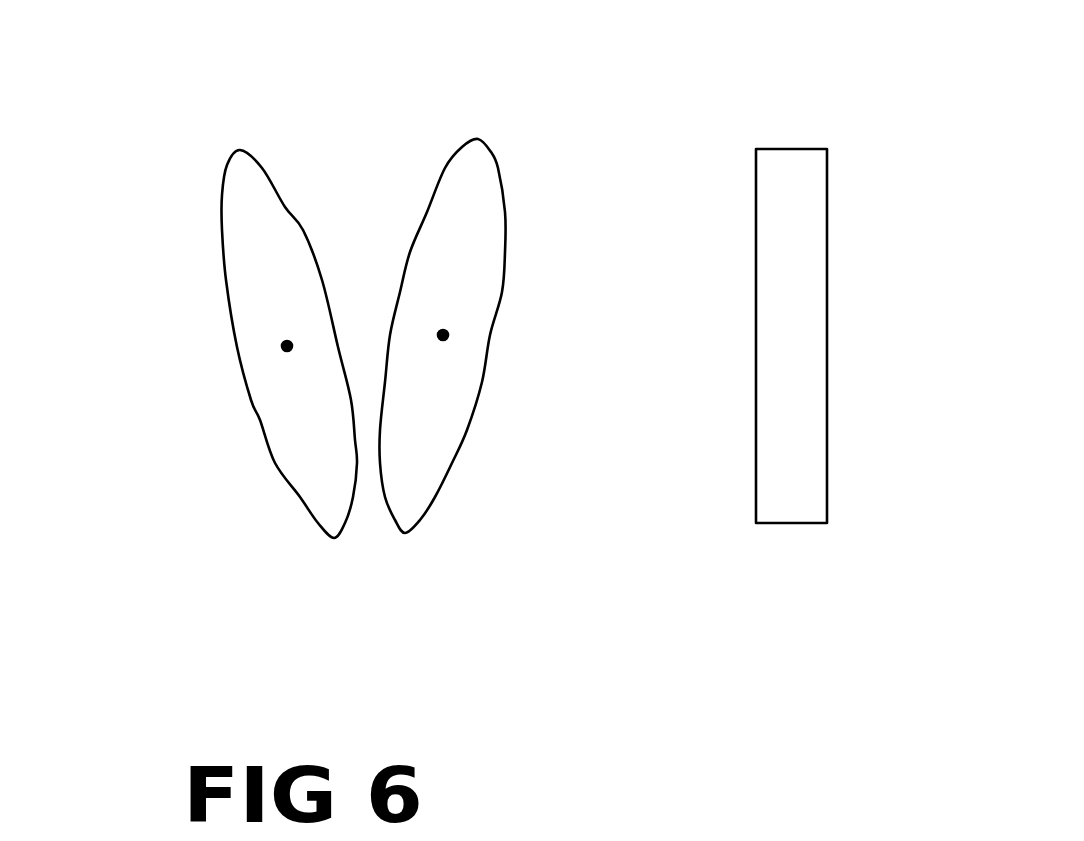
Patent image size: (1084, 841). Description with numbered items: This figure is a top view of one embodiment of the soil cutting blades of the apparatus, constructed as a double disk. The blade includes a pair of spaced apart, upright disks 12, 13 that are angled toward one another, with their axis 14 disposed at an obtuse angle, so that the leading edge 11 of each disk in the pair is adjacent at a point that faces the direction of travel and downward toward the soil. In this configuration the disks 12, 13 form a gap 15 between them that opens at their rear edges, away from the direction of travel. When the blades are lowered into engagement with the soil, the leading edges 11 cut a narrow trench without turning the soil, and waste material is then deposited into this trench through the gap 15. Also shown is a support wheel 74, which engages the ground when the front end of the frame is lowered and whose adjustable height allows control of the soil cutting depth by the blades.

The leading edge 11 is at (377, 540).
The disk 12 is at (233, 232).
The disk 13 is at (495, 213).
The axis 14 is at (595, 330).
The gap 15 is at (355, 175).
The support wheel 74 is at (820, 305).